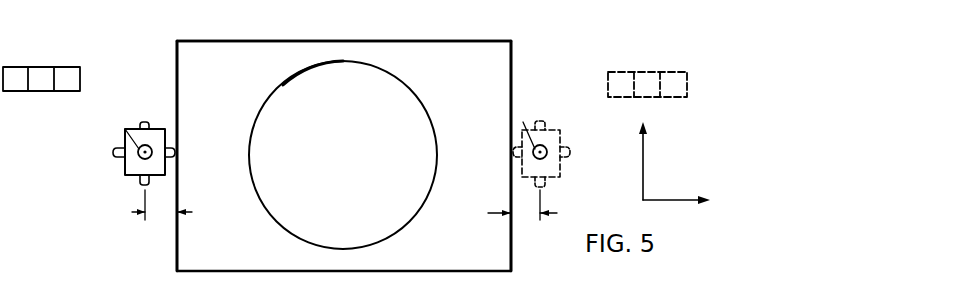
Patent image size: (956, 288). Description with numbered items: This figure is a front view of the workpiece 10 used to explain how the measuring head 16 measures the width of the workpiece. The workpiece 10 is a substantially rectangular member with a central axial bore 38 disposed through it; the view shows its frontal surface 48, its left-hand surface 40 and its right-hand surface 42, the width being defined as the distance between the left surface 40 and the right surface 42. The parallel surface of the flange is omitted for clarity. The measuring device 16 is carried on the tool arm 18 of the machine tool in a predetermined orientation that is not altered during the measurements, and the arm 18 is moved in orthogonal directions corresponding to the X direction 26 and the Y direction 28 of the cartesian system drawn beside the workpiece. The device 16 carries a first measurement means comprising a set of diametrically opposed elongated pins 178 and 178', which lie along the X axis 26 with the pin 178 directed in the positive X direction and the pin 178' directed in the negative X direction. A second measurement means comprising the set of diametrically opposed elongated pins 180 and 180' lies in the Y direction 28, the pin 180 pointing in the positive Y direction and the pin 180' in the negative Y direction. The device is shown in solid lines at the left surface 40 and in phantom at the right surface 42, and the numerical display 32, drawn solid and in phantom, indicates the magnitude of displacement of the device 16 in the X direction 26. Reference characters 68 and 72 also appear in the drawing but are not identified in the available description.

The workpiece 10 is at (317, 41).
The measuring head 16 is at (201, 119).
The tool arm 18 is at (139, 156).
The X direction 26 is at (665, 200).
The Y direction 28 is at (643, 173).
The numerical display 32 is at (80, 79).
The central axial bore 38 is at (281, 89).
The left-hand surface 40 is at (175, 59).
The right-hand surface 42 is at (513, 52).
The frontal surface 48 is at (231, 47).
The pointer 68 is at (125, 129).
The offset distance 72 is at (161, 213).
The elongated pin 178 is at (391, 143).
The elongated pin 178' is at (297, 136).
The elongated pin 180 is at (354, 104).
The elongated pin 180' is at (348, 190).